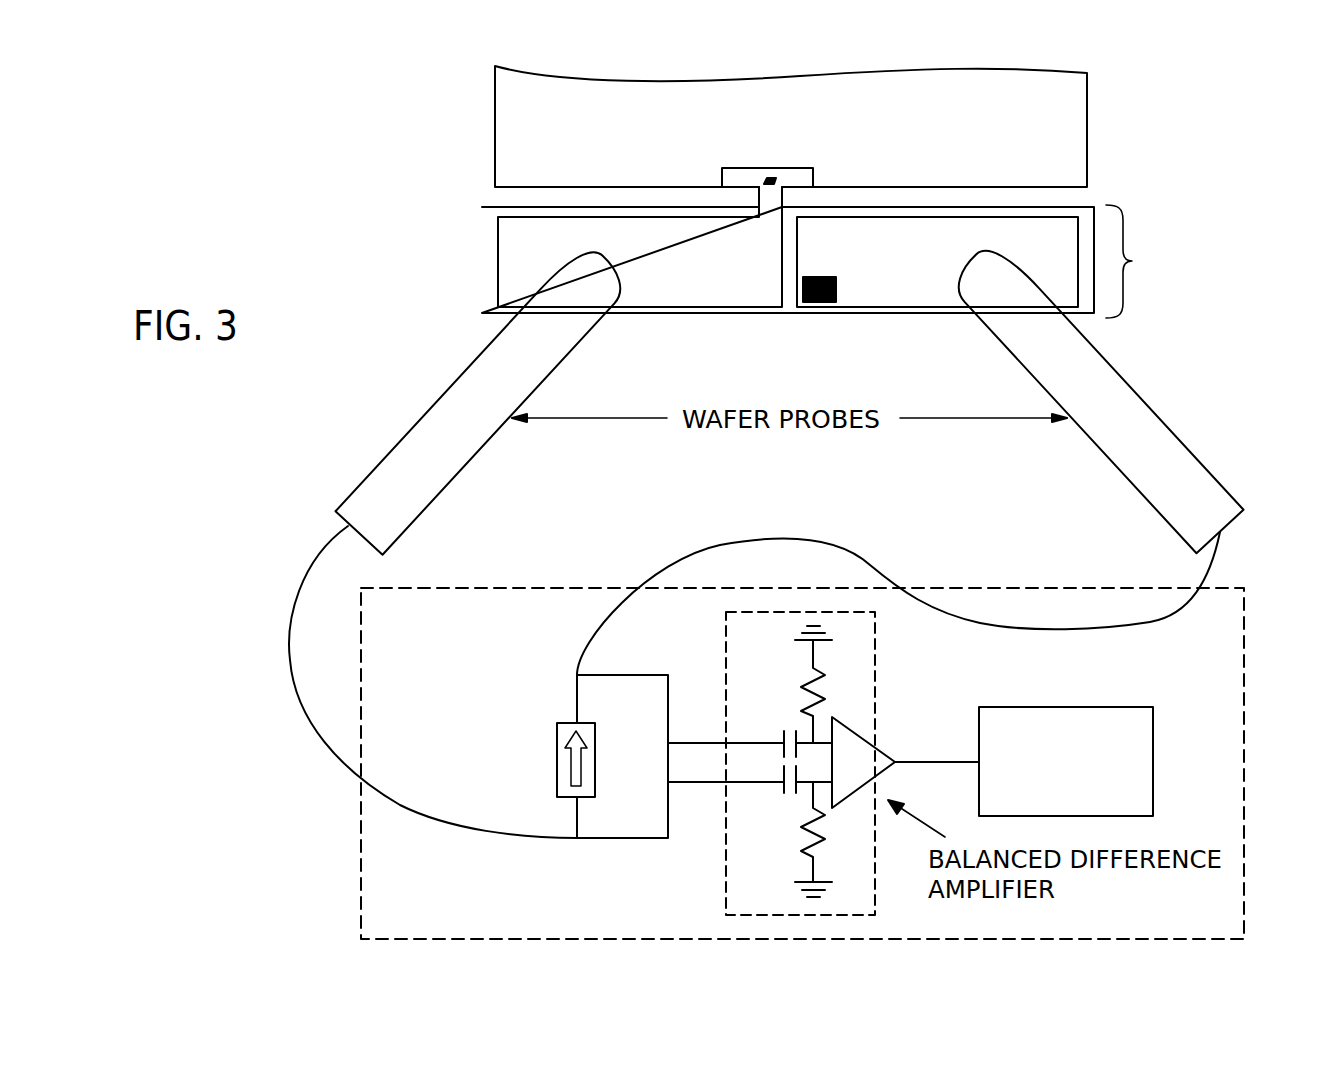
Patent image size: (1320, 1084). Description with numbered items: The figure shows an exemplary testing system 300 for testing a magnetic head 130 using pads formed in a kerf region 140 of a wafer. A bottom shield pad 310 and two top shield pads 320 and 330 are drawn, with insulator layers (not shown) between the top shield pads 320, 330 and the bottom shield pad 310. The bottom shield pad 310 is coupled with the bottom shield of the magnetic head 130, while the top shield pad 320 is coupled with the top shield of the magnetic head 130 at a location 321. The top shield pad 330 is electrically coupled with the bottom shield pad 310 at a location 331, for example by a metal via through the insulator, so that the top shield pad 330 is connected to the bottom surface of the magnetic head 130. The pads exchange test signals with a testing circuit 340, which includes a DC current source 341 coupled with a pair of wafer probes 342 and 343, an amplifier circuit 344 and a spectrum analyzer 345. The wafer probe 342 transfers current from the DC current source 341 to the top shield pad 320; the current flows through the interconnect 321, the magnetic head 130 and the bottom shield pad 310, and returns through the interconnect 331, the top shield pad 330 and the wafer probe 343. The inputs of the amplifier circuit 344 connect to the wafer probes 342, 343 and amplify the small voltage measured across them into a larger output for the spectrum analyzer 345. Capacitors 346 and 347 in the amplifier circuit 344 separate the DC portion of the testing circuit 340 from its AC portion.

The test system 300 is at (478, 145).
The magnetic head 130 is at (1087, 126).
The interconnect 321 is at (778, 178).
The top shield pad 330 is at (1053, 238).
The bottom shield pad 310 is at (482, 262).
The top shield pad 320 is at (683, 293).
The interconnect 331 is at (826, 302).
The kerf region 140 is at (1144, 261).
The wafer probe 342 is at (402, 437).
The wafer probe 343 is at (1177, 437).
The testing circuit 340 is at (361, 826).
The DC current source 341 is at (563, 723).
The amplifier circuit 344 is at (852, 763).
The spectrum analyzer 345 is at (1073, 707).
The capacitor 346 is at (783, 732).
The capacitor 347 is at (783, 790).